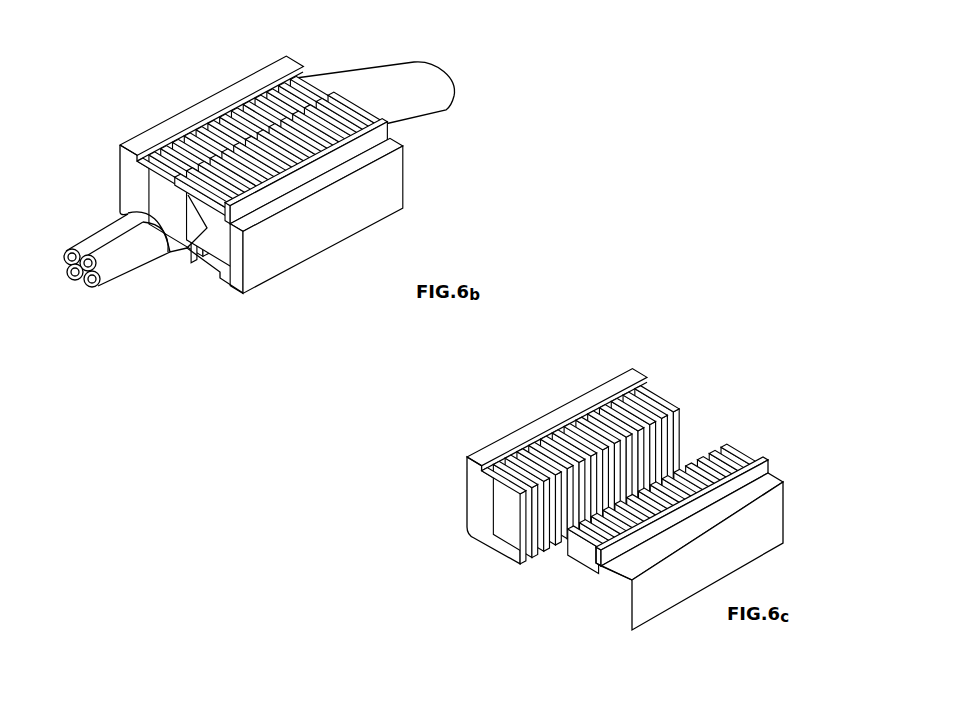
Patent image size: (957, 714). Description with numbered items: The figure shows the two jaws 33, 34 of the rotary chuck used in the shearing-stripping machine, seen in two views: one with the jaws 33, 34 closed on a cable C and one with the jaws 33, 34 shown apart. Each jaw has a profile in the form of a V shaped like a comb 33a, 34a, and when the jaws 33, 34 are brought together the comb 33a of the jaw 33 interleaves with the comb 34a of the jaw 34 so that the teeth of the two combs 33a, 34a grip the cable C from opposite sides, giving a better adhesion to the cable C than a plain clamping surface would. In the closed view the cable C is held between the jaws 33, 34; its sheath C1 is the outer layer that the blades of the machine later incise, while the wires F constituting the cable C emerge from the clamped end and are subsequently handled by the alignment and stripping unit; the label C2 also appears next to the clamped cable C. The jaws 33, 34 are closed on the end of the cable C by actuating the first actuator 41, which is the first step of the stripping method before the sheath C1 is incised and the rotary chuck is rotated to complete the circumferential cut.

In FIG. 6B, the jaw 33 is at (133, 183).
In FIG. 6C, the jaw 33 is at (483, 498).
In FIG. 6B, the comb 33a is at (328, 72).
In FIG. 6C, the comb 33a is at (680, 385).
In FIG. 6B, the jaw 34 is at (264, 263).
In FIG. 6C, the jaw 34 is at (598, 585).
In FIG. 6B, the comb 34a is at (365, 107).
In FIG. 6C, the comb 34a is at (750, 437).
In FIG. 6B, the cable C is at (418, 76).
In FIG. 6B, the sheath C1 is at (185, 222).
In FIG. 6B, the cable core C2 is at (135, 307).
In FIG. 6B, the wires F is at (90, 287).
In FIG. 6B, the first actuator 41 is at (750, 0).